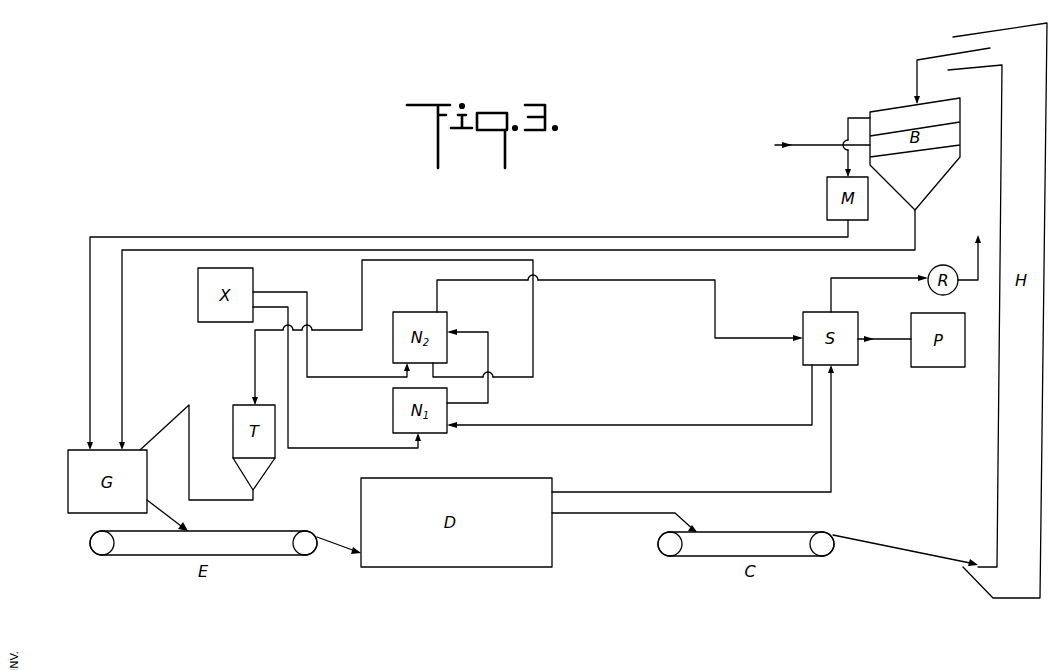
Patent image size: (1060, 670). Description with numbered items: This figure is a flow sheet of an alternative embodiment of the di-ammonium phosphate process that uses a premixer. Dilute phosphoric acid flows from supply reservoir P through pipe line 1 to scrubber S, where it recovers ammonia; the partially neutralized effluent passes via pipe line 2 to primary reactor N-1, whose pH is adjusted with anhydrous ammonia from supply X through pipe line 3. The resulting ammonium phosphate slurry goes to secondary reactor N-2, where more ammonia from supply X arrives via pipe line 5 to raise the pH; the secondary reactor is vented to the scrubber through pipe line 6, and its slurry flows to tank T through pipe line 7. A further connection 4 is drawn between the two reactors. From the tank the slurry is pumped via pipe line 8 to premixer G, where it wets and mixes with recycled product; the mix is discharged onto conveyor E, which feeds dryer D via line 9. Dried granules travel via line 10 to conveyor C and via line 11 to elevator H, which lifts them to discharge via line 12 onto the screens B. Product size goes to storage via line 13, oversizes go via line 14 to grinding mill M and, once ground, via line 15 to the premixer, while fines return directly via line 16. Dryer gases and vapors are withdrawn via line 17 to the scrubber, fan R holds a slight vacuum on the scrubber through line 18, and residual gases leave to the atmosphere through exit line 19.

The pipe line 1 is at (888, 338).
The pipe line 2 is at (652, 424).
The pipe line 3 is at (355, 447).
The line from N1 to N2 4 is at (487, 363).
The pipe line 5 is at (306, 291).
The pipe line 6 is at (592, 287).
The pipe line 7 is at (363, 307).
The pipe line 8 is at (190, 490).
The line 9 is at (335, 537).
The line 10 is at (620, 513).
The line 11 is at (920, 548).
The line 12 is at (933, 58).
The line 13 is at (803, 143).
The line 14 is at (846, 118).
The line 15 is at (508, 237).
The line 16 is at (920, 220).
The line 17 is at (835, 412).
The line 18 is at (896, 278).
The exit line 19 is at (975, 251).